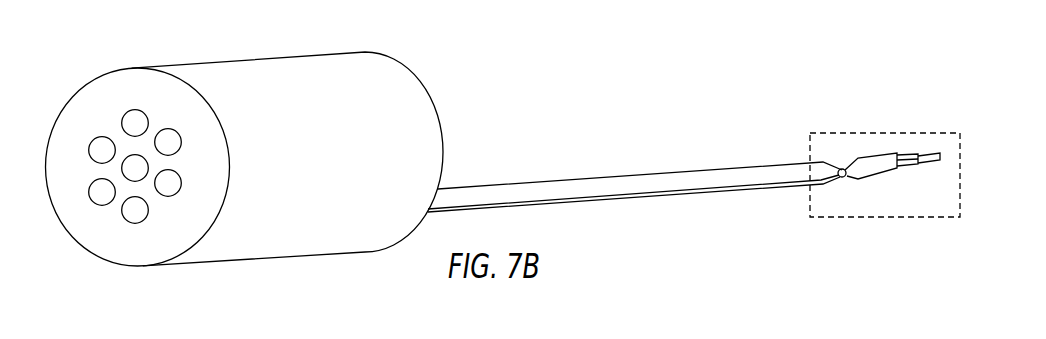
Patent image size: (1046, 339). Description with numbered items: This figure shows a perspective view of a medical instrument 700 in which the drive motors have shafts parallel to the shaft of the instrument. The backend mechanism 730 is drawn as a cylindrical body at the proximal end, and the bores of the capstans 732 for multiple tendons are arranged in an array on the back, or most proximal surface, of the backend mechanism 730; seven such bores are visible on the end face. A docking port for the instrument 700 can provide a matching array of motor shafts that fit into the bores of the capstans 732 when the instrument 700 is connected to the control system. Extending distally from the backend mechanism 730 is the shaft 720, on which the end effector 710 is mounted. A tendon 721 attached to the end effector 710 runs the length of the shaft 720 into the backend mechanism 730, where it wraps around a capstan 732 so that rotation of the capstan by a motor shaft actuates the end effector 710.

The medical instrument 700 is at (762, 65).
The end effector 710 is at (899, 209).
The shaft 720 is at (602, 182).
The tendon 721 is at (727, 188).
The backend mechanism 730 is at (327, 211).
The capstan 732 is at (130, 122).